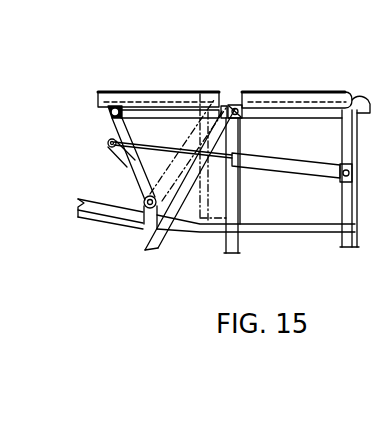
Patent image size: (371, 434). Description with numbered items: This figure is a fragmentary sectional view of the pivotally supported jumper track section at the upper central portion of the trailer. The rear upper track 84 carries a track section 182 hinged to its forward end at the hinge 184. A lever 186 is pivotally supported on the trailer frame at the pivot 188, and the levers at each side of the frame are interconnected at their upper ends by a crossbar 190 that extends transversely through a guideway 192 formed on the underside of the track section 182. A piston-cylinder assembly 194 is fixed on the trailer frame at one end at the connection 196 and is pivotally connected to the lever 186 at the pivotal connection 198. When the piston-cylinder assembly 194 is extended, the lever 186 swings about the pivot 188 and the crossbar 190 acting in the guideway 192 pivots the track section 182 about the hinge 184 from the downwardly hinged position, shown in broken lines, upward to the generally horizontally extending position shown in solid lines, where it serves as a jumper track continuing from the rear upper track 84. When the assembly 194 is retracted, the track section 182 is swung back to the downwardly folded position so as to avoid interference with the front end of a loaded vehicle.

The rear upper track 84 is at (313, 98).
The track section 182 is at (186, 100).
The hinge 184 is at (222, 112).
The lever 186 is at (132, 171).
The lever pivot 188 is at (148, 212).
The crossbar 190 is at (107, 112).
The guideway 192 is at (143, 112).
The piston-cylinder assembly 194 is at (276, 165).
The fixed end connection 196 is at (343, 178).
The pivotal connection 198 is at (108, 144).